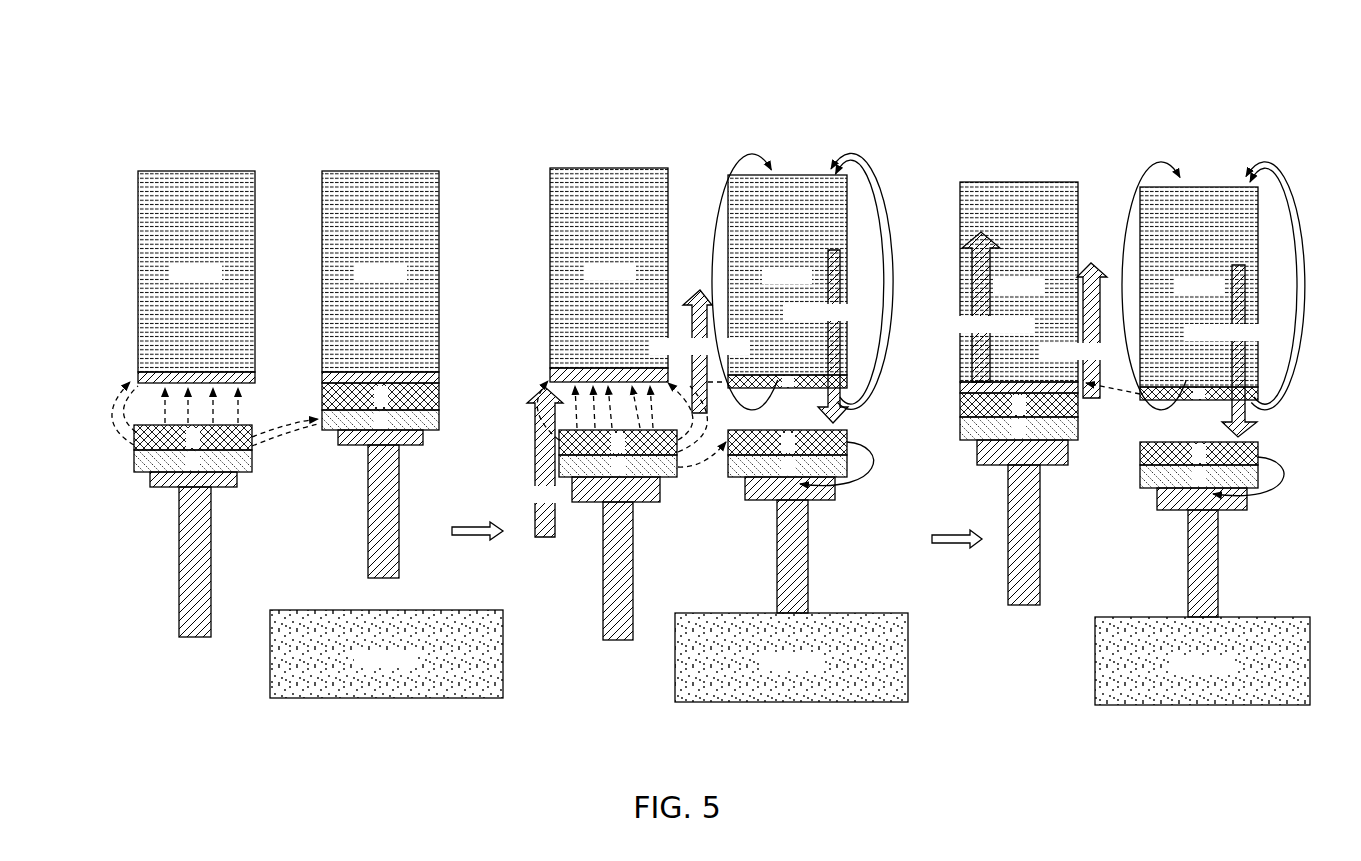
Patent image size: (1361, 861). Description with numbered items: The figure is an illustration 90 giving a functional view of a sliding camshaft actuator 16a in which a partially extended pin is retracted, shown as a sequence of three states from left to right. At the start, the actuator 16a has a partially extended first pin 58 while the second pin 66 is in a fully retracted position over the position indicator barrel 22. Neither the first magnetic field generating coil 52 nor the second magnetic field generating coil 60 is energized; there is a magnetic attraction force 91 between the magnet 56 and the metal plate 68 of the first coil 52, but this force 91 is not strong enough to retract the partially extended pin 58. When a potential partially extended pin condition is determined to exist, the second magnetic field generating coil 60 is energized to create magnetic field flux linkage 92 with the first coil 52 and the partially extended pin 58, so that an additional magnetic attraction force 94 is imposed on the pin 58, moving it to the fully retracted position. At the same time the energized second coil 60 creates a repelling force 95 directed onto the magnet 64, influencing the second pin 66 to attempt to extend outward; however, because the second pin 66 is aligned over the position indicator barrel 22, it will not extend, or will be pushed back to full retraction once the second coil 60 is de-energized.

The sliding camshaft actuator 16a is at (122, 182).
The position indicator barrel 22 is at (490, 658).
The first magnetic field generating coil 52 is at (186, 171).
The magnet 56 is at (132, 460).
The first pin 58 is at (190, 600).
The second magnetic field generating coil 60 is at (346, 171).
The magnet 64 is at (443, 417).
The second pin 66 is at (368, 548).
The metal plate 68 is at (136, 377).
The illustration 90 is at (970, 84).
The magnetic attraction force 91 is at (258, 405).
The magnetic field flux linkage 92 is at (819, 150).
The additional magnetic attraction force 94 is at (706, 303).
The repelling force 95 is at (836, 266).